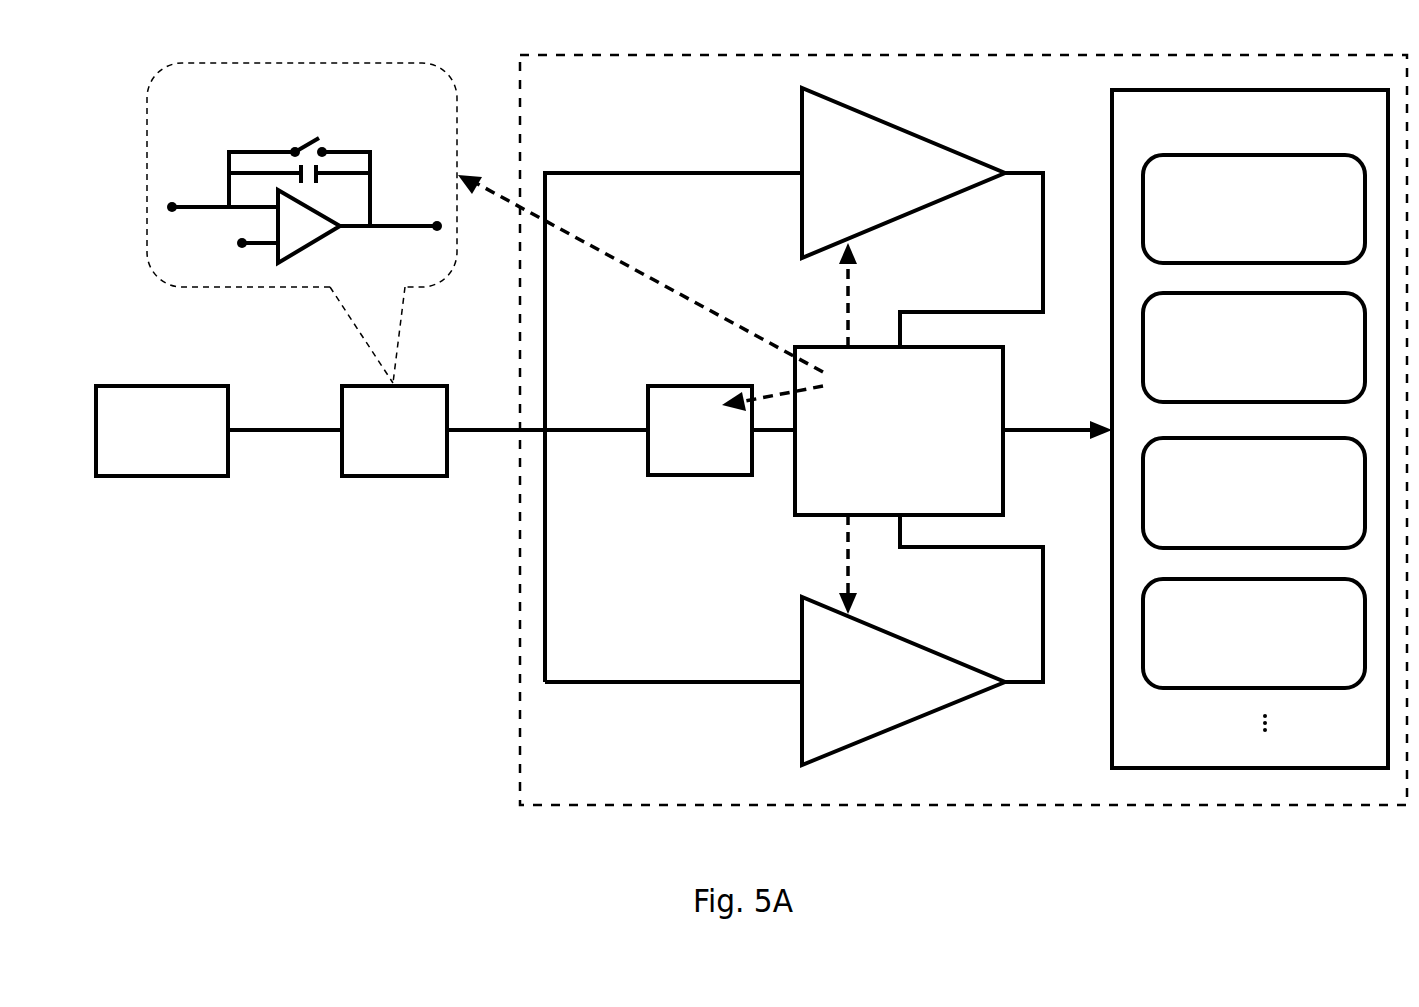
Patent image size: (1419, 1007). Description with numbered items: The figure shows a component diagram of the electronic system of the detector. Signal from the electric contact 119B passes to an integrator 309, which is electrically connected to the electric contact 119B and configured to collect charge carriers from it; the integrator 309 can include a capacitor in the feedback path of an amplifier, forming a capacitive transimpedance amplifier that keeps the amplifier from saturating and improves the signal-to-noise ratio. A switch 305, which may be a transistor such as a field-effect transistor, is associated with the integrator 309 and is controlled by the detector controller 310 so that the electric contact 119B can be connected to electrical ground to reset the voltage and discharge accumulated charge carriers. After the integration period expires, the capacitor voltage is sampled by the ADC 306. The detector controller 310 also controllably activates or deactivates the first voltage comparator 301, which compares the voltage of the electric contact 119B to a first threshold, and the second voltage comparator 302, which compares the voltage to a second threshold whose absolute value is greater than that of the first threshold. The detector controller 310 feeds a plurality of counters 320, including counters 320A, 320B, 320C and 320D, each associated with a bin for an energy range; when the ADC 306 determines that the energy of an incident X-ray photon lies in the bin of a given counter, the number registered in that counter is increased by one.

The electric contact 119B is at (162, 431).
The integrator 309 is at (302, 269).
The switch 305 is at (331, 139).
The ADC 306 is at (700, 430).
The detector controller 310 is at (899, 431).
The first voltage comparator 301 is at (903, 173).
The second voltage comparator 302 is at (903, 681).
The counters 320 is at (1250, 429).
The counter 320A is at (1254, 209).
The counter 320B is at (1254, 347).
The counter 320C is at (1254, 493).
The counter 320D is at (1254, 633).